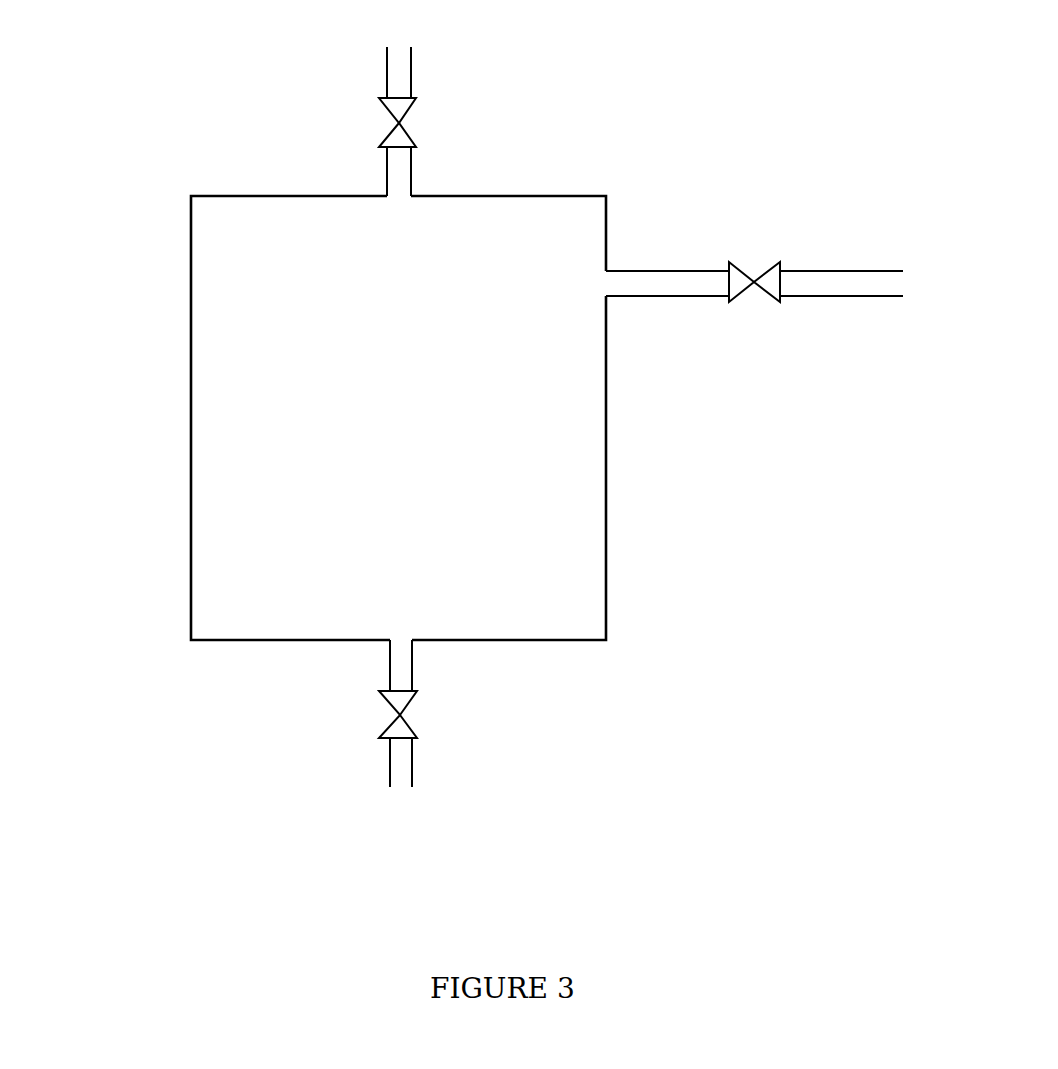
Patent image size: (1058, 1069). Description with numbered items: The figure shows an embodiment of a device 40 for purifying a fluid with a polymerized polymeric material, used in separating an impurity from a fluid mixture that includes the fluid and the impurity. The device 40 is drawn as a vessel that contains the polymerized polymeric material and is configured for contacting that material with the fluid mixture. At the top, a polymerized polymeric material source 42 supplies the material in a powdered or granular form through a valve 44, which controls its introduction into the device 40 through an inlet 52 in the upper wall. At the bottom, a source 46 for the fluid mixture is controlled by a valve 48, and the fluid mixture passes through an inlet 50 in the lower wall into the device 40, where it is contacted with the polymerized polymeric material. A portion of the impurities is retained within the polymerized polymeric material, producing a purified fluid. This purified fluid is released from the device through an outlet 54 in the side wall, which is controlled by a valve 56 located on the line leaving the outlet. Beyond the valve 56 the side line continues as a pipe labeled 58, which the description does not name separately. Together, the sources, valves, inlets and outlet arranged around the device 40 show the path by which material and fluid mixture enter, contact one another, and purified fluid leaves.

The device 40 is at (191, 526).
The polymerized polymeric material source 42 is at (405, 53).
The valve 44 is at (405, 122).
The inlet 52 is at (400, 193).
The outlet 54 is at (607, 283).
The valve 56 is at (755, 268).
The side outlet pipe 58 is at (866, 286).
The inlet 50 is at (400, 643).
The valve 48 is at (408, 715).
The source 46 is at (403, 786).